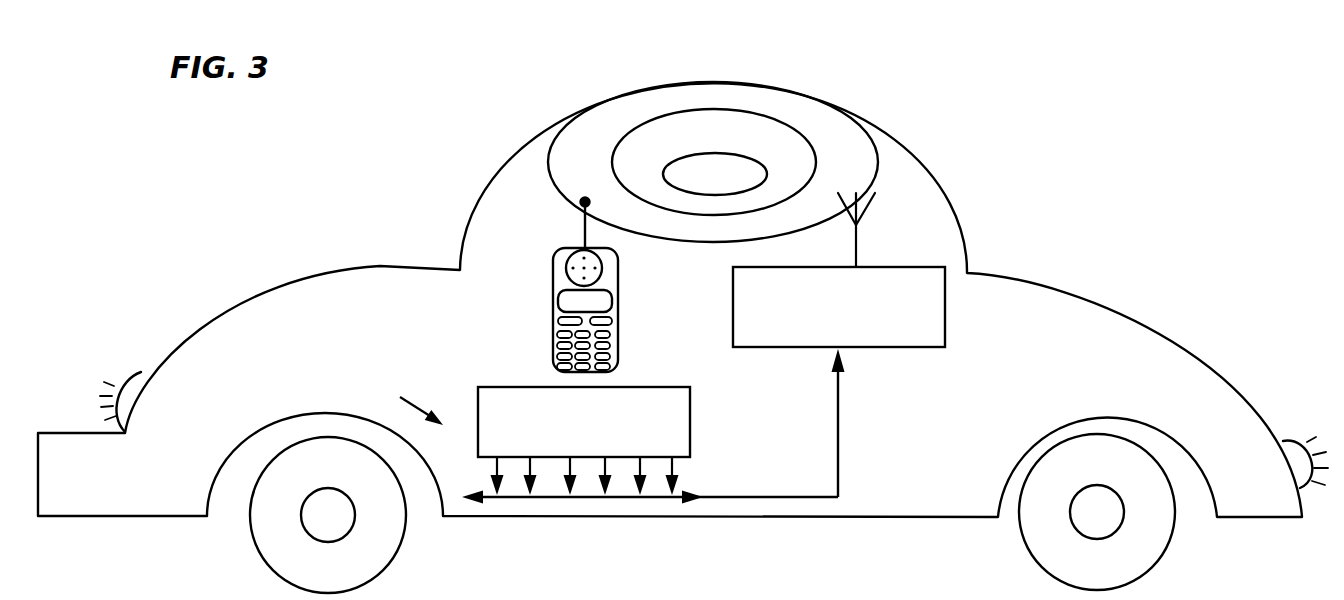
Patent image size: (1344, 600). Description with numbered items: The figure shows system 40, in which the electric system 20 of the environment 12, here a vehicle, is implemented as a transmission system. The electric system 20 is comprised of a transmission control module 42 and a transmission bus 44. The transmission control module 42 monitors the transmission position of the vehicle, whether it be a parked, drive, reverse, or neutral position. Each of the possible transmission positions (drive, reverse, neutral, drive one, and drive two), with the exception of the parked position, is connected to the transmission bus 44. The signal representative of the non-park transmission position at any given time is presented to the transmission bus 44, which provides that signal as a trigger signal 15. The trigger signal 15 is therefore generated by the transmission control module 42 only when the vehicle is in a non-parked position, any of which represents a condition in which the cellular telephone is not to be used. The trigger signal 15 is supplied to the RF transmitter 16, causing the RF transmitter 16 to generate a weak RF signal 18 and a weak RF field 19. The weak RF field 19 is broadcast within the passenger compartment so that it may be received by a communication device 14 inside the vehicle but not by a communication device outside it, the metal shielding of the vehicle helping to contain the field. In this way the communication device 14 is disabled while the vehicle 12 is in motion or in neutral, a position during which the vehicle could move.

The environment 12 is at (1075, 313).
The communication device 14 is at (552, 362).
The trigger signal 15 is at (840, 400).
The RF transmitter 16 is at (945, 305).
The weak RF signal 18 is at (860, 242).
The weak RF field 19 is at (762, 123).
The electric system 20 is at (406, 402).
The system 40 is at (1018, 135).
The transmission control module 42 is at (478, 400).
The transmission bus 44 is at (633, 497).